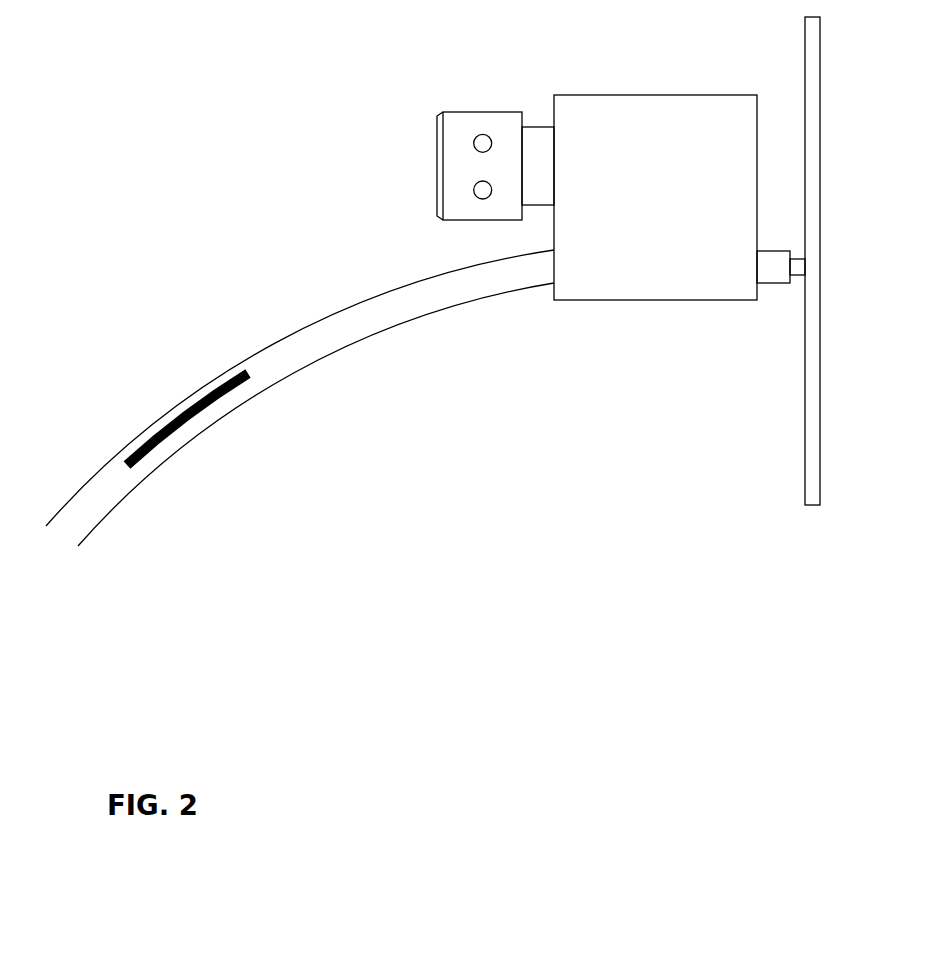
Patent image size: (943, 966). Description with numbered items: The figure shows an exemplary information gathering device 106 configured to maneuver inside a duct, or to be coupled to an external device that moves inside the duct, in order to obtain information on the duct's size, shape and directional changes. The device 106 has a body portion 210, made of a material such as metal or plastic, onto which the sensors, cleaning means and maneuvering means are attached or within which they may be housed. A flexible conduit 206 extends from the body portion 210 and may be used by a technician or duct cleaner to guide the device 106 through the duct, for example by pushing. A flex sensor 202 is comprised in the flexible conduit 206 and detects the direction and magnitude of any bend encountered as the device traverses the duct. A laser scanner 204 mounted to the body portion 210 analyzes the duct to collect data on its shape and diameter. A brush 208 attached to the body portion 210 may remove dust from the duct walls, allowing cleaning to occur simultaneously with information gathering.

The information gathering device 106 is at (500, 535).
The flex sensor 202 is at (163, 422).
The laser scanner 204 is at (458, 110).
The flexible conduit 206 is at (325, 315).
The brush 208 is at (805, 77).
The body portion 210 is at (621, 95).